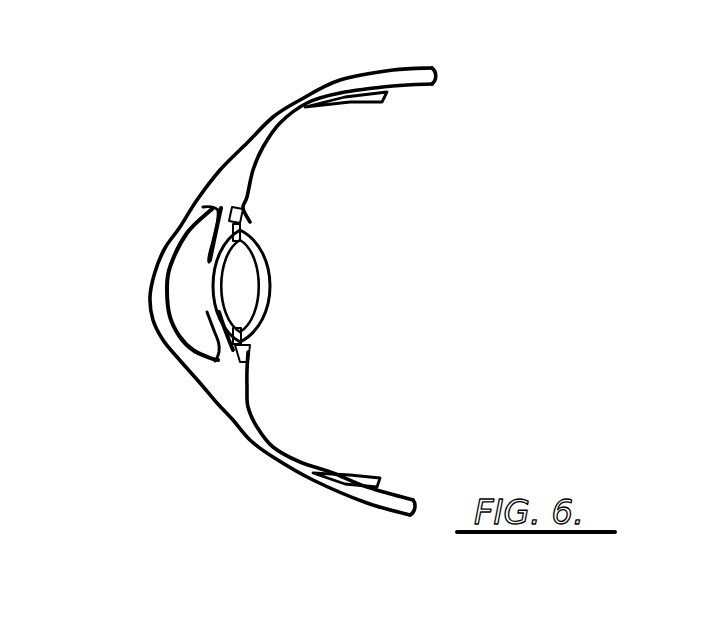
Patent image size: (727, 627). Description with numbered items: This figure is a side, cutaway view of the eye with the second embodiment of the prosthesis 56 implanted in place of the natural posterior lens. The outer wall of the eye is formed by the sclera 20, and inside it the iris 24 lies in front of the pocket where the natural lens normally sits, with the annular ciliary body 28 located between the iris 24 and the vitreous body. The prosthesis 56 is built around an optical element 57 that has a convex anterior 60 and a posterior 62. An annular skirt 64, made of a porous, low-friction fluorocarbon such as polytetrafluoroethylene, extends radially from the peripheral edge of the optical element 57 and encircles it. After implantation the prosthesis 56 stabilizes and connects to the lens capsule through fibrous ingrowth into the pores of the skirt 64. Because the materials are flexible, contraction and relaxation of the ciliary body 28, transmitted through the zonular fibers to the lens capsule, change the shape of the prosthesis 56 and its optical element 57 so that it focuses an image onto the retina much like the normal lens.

The sclera 20 is at (230, 400).
The iris 24 is at (212, 330).
The ciliary body 28 is at (244, 207).
The prosthesis 56 is at (294, 286).
The optical element 57 is at (255, 300).
The convex anterior surface 60 is at (212, 288).
The posterior surface 62 is at (262, 287).
The annular skirt 64 is at (241, 222).